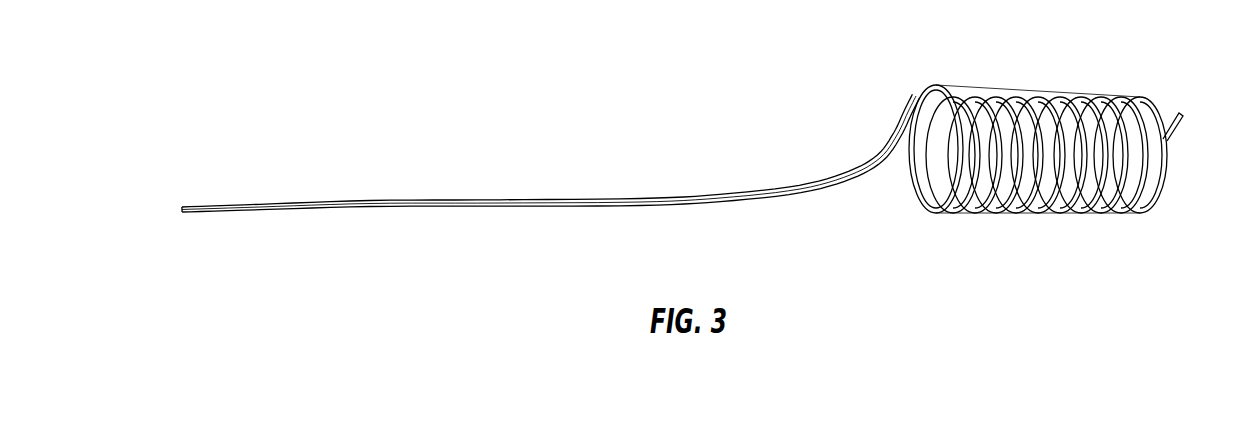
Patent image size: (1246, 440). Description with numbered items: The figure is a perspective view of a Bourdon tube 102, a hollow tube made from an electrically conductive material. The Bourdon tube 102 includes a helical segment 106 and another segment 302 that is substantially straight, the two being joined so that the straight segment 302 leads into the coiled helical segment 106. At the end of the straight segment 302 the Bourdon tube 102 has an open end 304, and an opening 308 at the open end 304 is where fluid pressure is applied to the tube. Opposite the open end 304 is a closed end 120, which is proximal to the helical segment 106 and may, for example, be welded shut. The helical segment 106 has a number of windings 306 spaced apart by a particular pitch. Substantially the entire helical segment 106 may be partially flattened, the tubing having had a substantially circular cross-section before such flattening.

The Bourdon tube 102 is at (240, 90).
The helical segment 106 is at (1155, 83).
The closed end 120 is at (1178, 106).
The segment 302 is at (907, 223).
The open end 304 is at (187, 206).
The windings 306 is at (1027, 224).
The opening 308 is at (183, 209).